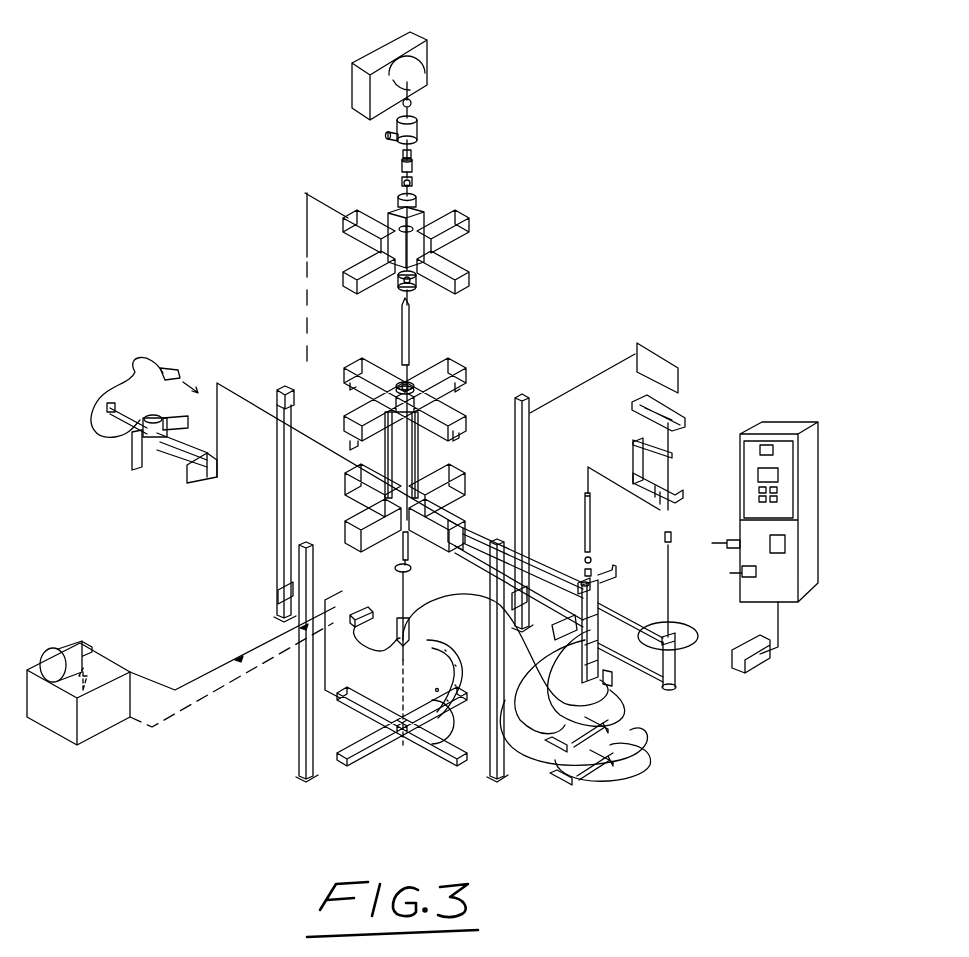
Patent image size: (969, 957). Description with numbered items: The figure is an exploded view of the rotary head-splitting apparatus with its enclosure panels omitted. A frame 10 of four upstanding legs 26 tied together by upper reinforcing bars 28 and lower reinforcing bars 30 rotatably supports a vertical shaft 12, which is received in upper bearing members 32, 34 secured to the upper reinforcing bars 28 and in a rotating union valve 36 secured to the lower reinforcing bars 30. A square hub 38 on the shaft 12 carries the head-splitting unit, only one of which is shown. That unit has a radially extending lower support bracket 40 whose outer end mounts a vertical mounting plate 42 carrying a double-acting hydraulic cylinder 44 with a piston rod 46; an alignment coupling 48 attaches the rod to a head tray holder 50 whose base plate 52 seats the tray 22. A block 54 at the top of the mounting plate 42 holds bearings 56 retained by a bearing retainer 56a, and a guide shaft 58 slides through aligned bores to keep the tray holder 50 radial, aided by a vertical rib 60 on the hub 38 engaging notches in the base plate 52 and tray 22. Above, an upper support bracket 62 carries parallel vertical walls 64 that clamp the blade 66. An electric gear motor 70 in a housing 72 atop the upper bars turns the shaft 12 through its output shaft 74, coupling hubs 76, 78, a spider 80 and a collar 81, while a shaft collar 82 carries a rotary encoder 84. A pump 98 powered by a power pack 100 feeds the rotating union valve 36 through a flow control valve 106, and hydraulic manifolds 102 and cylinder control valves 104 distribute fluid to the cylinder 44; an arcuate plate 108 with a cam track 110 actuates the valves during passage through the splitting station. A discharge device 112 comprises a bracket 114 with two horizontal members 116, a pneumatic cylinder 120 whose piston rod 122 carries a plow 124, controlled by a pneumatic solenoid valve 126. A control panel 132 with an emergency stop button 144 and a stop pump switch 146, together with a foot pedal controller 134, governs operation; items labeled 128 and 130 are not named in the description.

The frame 10 is at (285, 765).
The vertical shaft 12 is at (412, 192).
The tray 22 is at (675, 405).
The upstanding legs 26 is at (278, 508).
The upper reinforcing bars 28 is at (432, 230).
The lower reinforcing bars 30 is at (454, 702).
The upper bearing member 32 is at (398, 208).
The upper bearing member 34 is at (414, 283).
The rotating union valve 36 is at (405, 618).
The hub 38 is at (440, 478).
The lower support bracket 40 is at (420, 522).
The mounting plate 42 is at (582, 645).
The hydraulic cylinder 44 is at (676, 690).
The piston rod 46 is at (650, 690).
The alignment coupling 48 is at (672, 537).
The head tray holder 50 is at (625, 470).
The base plate 52 is at (672, 494).
The block 54 is at (584, 578).
The bearings 56 is at (585, 558).
The bearing retainer 56a is at (614, 578).
The guide shaft 58 is at (585, 520).
The vertical rib 60 is at (438, 474).
The upper support bracket 62 is at (419, 401).
The vertical walls 64 is at (462, 405).
The blade 66 is at (637, 345).
The electric gear motor 70 is at (418, 128).
The housing 72 is at (420, 60).
The output shaft 74 is at (395, 138).
The coupling hub 76 is at (412, 164).
The coupling hub 78 is at (413, 183).
The spider 80 is at (413, 168).
The collar 81 is at (402, 155).
The shaft collar 82 is at (415, 119).
The rotary encoder 84 is at (413, 102).
The pump 98 is at (48, 640).
The power pack 100 is at (58, 752).
The hydraulic manifolds 102 is at (548, 742).
The cylinder control valve 104 is at (610, 686).
The flow control valve 106 is at (352, 630).
The arcuate plate 108 is at (436, 690).
The cam track 110 is at (457, 625).
The discharge device 112 is at (146, 416).
The bracket 114 is at (148, 416).
The horizontal members 116 is at (165, 398).
The pneumatic cylinder 120 is at (130, 427).
The piston rod 122 is at (170, 450).
The plow 124 is at (195, 478).
The pneumatic solenoid valve 126 is at (170, 368).
The guide rods 128 is at (168, 462).
The shelf 130 is at (636, 450).
The control panel 132 is at (782, 517).
The foot pedal controller 134 is at (762, 670).
The emergency stop button 144 is at (798, 498).
The stop pump switch 146 is at (752, 505).